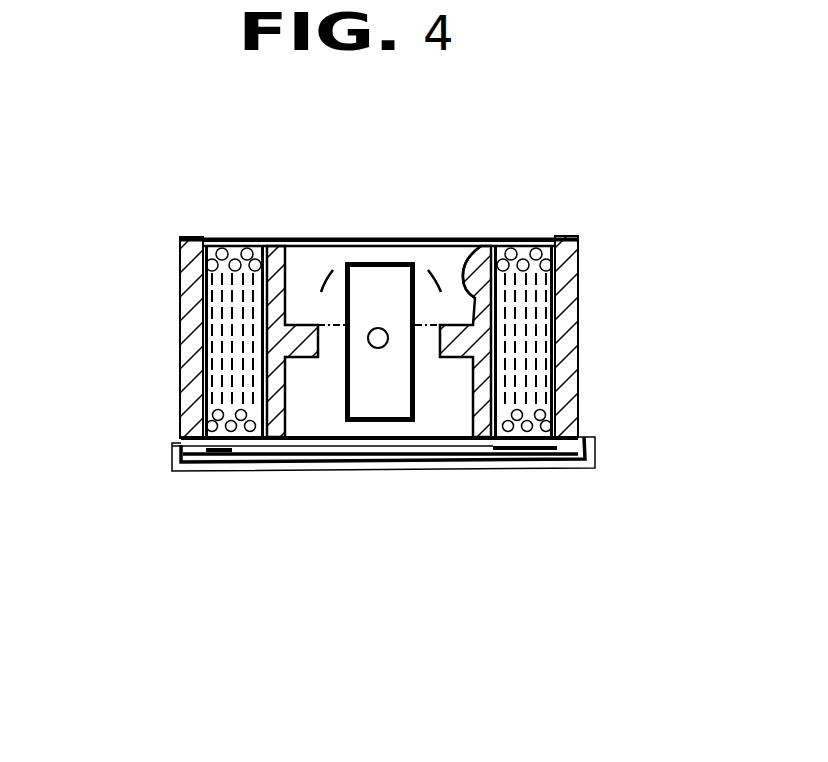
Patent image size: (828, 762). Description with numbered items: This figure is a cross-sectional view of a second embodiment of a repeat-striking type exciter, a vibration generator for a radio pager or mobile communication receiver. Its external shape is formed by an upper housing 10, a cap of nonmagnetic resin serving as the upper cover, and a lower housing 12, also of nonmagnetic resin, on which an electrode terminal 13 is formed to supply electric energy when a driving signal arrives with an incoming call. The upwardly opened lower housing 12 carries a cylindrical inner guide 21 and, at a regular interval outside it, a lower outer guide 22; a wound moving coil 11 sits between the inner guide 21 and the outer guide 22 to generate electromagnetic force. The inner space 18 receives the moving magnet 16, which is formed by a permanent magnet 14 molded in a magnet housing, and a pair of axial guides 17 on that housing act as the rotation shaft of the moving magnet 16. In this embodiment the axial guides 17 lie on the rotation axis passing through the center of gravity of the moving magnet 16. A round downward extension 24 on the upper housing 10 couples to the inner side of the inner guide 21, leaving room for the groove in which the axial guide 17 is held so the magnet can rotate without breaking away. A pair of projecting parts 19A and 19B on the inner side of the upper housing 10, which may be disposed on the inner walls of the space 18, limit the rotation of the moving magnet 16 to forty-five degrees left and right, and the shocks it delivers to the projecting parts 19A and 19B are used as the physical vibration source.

The upper housing 10 is at (578, 254).
The moving coil 11 is at (205, 270).
The lower housing 12 is at (172, 446).
The electrode terminal 13 is at (222, 473).
The permanent magnet 14 is at (404, 262).
The moving magnet 16 is at (351, 238).
The axial guide 17 is at (376, 349).
The space 18 is at (457, 263).
The projecting part 19A is at (303, 325).
The projecting part 19B is at (490, 324).
The inner guide 21 is at (497, 326).
The outer guide 22 is at (580, 393).
The downward extension 24 is at (483, 243).